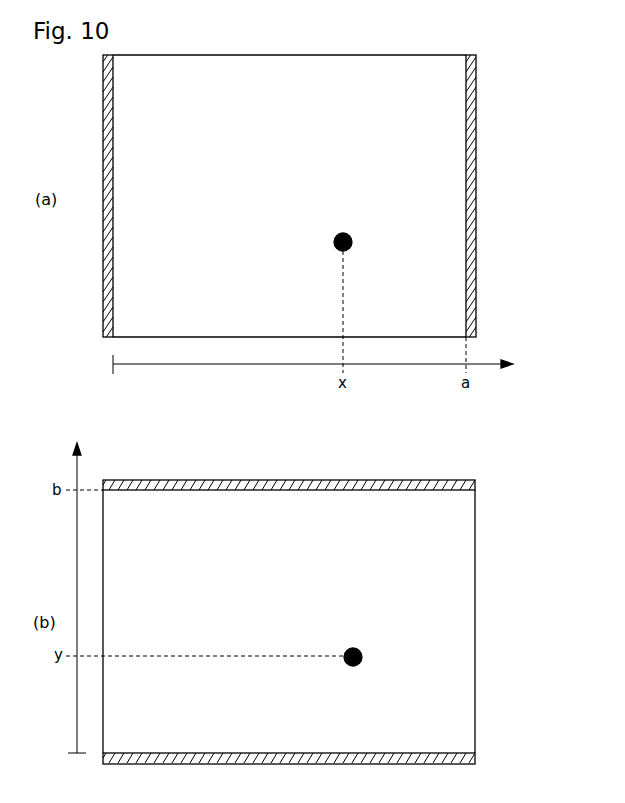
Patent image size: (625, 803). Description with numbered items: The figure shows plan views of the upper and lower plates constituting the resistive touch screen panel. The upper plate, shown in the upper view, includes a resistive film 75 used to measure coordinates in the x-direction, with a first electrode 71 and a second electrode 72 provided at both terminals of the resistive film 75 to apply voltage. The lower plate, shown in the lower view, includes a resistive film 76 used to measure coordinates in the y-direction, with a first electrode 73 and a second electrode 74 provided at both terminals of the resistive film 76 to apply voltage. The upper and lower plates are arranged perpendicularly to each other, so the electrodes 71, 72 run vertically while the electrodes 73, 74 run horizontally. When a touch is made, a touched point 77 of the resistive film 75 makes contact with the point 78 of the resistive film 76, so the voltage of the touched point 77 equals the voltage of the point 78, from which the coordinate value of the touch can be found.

The first electrode 71 is at (103, 122).
The second electrode 72 is at (472, 122).
The first electrode 73 is at (305, 485).
The second electrode 74 is at (303, 758).
The resistive film 75 is at (443, 170).
The resistive film 76 is at (453, 585).
The touched point 77 is at (352, 241).
The point 78 is at (362, 655).